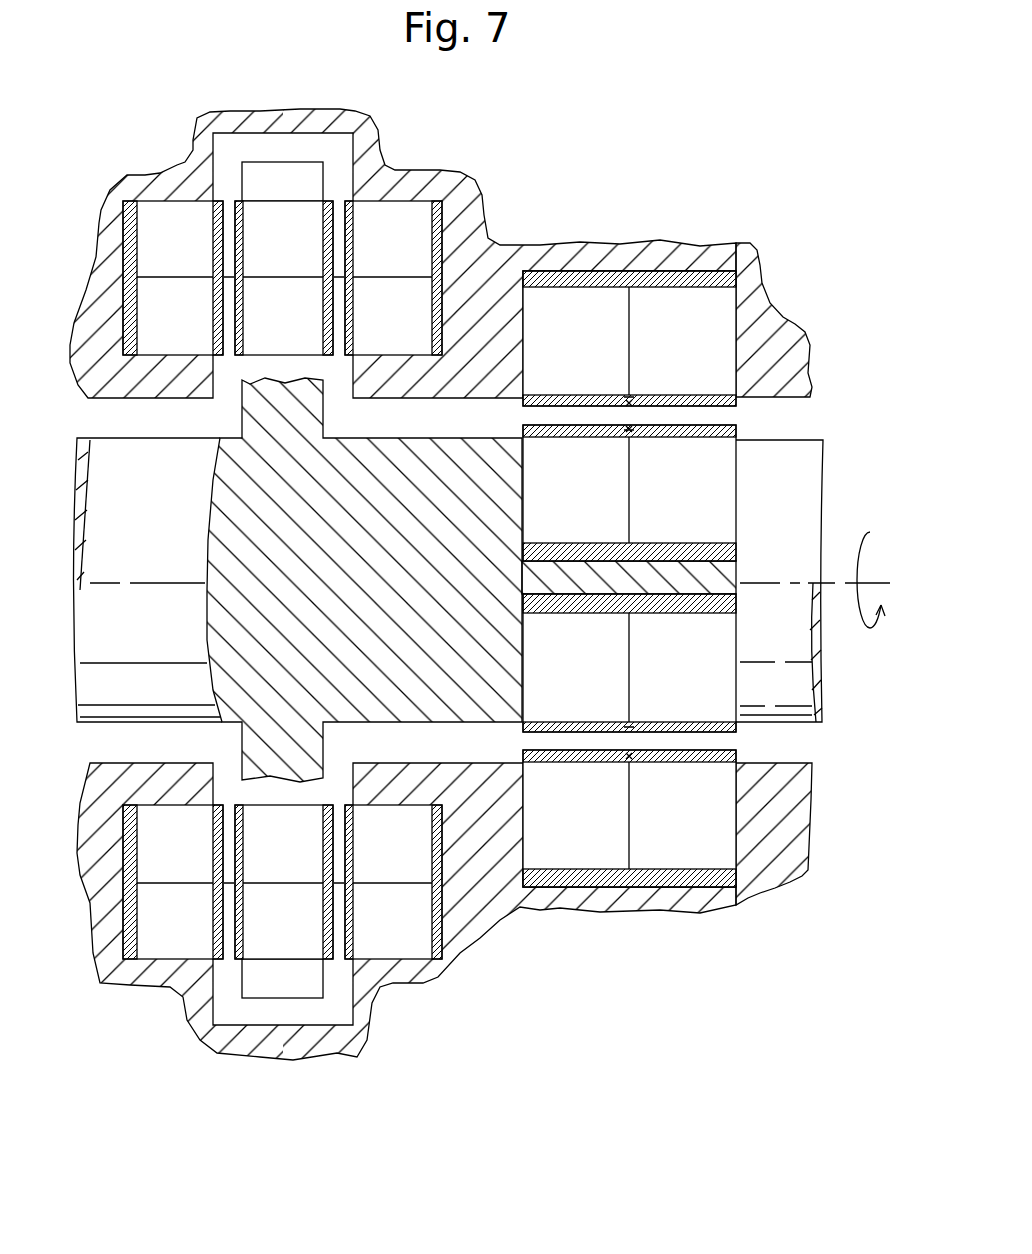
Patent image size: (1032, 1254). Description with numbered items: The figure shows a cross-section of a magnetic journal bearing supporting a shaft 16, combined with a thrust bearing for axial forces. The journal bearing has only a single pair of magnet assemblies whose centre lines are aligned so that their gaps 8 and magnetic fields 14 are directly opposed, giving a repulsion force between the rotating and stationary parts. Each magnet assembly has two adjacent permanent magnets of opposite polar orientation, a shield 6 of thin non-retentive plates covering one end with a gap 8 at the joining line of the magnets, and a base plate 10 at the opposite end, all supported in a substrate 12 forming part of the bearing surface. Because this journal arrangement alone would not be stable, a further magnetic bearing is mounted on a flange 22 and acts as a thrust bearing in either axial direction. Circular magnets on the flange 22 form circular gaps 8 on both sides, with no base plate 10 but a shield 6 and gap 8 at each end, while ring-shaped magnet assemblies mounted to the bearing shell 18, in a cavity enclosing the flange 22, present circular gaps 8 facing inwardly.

The shield 6 is at (725, 431).
The gap 8 is at (625, 430).
The base plate 10 is at (132, 213).
The substrate 12 is at (485, 245).
The magnetic field 14 is at (632, 765).
The shaft 16 is at (790, 520).
The bearing shell 18 is at (750, 315).
The flange 22 is at (293, 182).